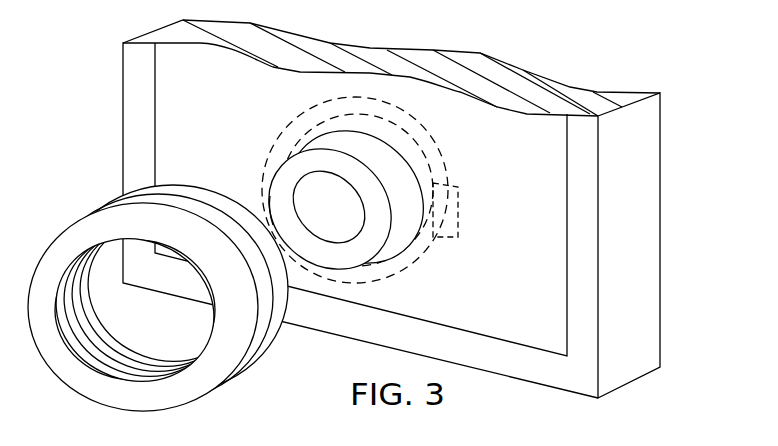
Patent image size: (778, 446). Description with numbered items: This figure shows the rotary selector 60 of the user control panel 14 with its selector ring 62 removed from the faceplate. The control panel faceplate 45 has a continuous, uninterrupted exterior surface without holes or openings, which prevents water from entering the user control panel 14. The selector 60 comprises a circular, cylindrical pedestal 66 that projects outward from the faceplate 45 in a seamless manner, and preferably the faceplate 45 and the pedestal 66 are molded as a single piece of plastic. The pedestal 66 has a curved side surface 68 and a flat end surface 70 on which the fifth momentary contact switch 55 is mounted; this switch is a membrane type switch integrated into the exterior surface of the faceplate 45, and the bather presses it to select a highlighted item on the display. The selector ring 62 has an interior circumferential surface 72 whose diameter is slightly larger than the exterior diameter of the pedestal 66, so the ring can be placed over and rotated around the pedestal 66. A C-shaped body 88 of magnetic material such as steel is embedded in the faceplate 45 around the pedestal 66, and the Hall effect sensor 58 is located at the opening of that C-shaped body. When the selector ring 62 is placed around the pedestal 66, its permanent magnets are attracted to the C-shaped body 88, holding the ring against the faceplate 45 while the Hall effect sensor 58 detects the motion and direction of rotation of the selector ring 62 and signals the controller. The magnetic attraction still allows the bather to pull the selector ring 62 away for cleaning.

The user control panel 14 is at (639, 213).
The control panel faceplate 45 is at (512, 357).
The fifth momentary contact switch 55 is at (330, 227).
The Hall effect sensor 58 is at (462, 203).
The rotary selector 60 is at (470, 157).
The selector ring 62 is at (277, 339).
The pedestal 66 is at (404, 217).
The curved side surface 68 is at (370, 152).
The flat end surface 70 is at (282, 205).
The interior circumferential surface 72 is at (107, 330).
The C-shaped body 88 is at (294, 110).